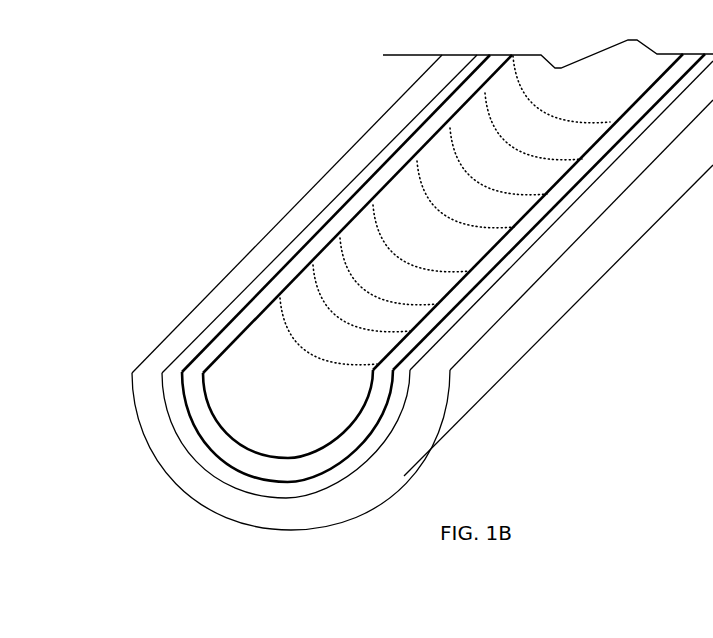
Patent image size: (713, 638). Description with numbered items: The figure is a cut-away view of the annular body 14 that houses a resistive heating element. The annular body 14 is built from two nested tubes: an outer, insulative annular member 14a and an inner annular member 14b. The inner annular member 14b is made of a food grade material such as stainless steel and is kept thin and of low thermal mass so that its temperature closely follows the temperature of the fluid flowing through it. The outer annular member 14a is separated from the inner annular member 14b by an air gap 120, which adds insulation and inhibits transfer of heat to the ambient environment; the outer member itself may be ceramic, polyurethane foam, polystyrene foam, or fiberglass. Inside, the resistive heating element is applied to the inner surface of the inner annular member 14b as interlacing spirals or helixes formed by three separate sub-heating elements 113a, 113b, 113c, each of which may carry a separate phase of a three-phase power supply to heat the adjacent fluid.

The annular body 14 is at (404, 285).
The outer insulative annular member 14a is at (511, 367).
The inner annular member 14b is at (326, 437).
The air gap 120 is at (188, 441).
The first sub-heating element 113a is at (287, 329).
The second sub-heating element 113b is at (461, 170).
The third sub-heating element 113c is at (549, 124).